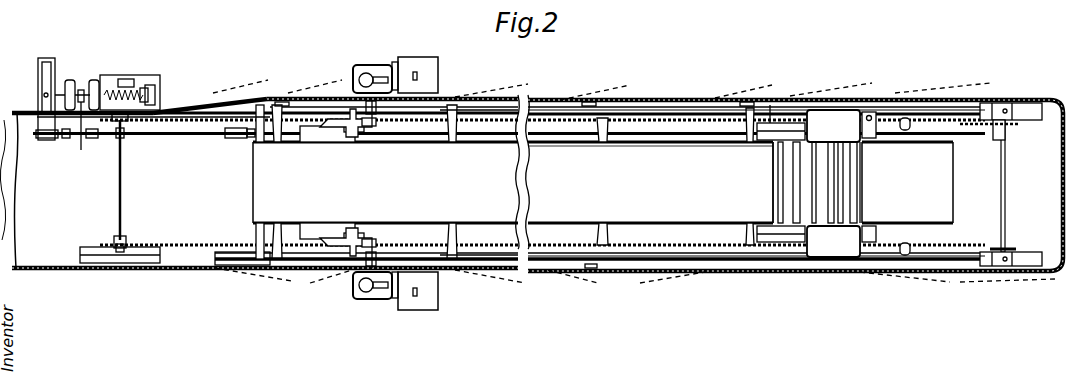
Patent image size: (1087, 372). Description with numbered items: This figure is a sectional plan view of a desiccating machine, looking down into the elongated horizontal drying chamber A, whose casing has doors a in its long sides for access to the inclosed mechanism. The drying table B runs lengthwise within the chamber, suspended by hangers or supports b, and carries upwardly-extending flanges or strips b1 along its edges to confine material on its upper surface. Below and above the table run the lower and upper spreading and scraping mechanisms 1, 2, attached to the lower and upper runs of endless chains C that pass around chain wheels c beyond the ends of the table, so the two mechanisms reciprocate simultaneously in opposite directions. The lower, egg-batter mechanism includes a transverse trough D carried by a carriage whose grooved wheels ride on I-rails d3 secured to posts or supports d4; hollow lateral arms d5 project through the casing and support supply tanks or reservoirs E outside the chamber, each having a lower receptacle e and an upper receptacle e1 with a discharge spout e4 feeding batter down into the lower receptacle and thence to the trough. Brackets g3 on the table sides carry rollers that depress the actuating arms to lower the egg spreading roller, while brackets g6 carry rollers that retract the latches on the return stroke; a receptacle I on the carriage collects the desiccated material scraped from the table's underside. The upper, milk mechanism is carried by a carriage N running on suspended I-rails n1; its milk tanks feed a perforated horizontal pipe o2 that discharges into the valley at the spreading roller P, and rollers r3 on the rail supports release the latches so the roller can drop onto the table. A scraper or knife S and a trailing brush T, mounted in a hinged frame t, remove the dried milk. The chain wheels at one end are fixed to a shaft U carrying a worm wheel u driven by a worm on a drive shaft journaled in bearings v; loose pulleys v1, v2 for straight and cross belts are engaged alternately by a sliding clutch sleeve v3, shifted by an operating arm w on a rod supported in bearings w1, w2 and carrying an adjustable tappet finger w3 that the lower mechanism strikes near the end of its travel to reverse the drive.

The drying chamber A is at (195, 270).
The doors a is at (478, 97).
The drying table B is at (603, 182).
The hangers or supports b is at (284, 97).
The flanges or strips b1 is at (680, 143).
The endless chains C is at (215, 135).
The chain wheels c is at (132, 140).
The trough D is at (380, 143).
The I-rails d3 is at (492, 105).
The posts or supports d4 is at (582, 98).
The lateral arms d5 is at (352, 100).
The supply tanks or reservoirs E is at (378, 65).
The lower receptacle e is at (365, 72).
The upper receptacle e1 is at (430, 70).
The discharge spout e4 is at (408, 70).
The brackets g3 is at (262, 125).
The brackets g6 is at (872, 125).
The receptacle I is at (300, 223).
The lower spreading and scraping mechanism 1 is at (382, 223).
The truck or carriage N is at (852, 160).
The I-rails n1 is at (884, 105).
The horizontal pipe o2 is at (820, 178).
The spreading roller P is at (838, 205).
The rollers r3 is at (904, 258).
The scraper or knife S is at (772, 160).
The brush T is at (760, 184).
The upper spreading and scraping mechanism 2 is at (775, 170).
The frame t is at (770, 230).
The shaft U is at (118, 172).
The worm wheel u is at (138, 90).
The bearings v is at (38, 97).
The pulley v1 is at (70, 80).
The pulley v2 is at (98, 88).
The sliding clutch sleeve v3 is at (84, 88).
The operating arm w is at (78, 138).
The bearing w1 is at (45, 140).
The bearing w2 is at (995, 128).
The tappet finger w3 is at (238, 135).